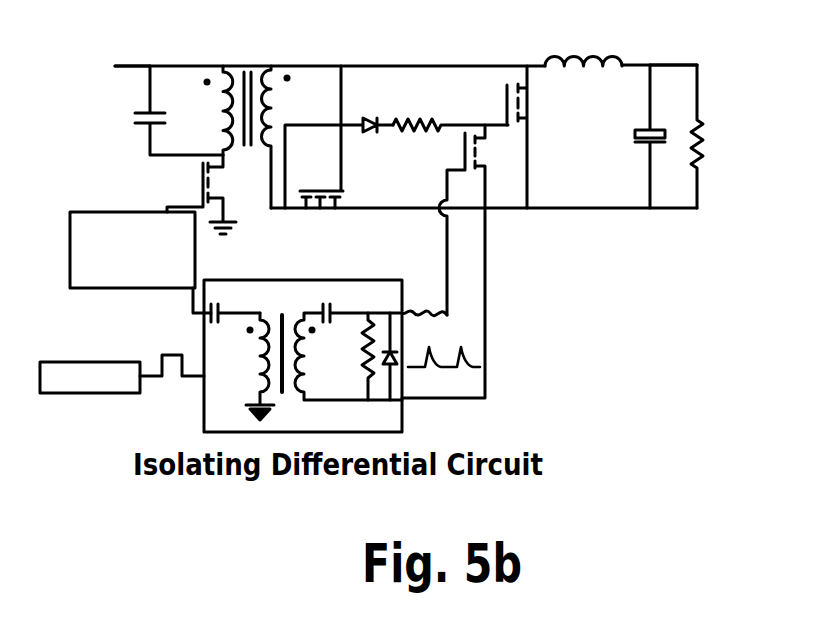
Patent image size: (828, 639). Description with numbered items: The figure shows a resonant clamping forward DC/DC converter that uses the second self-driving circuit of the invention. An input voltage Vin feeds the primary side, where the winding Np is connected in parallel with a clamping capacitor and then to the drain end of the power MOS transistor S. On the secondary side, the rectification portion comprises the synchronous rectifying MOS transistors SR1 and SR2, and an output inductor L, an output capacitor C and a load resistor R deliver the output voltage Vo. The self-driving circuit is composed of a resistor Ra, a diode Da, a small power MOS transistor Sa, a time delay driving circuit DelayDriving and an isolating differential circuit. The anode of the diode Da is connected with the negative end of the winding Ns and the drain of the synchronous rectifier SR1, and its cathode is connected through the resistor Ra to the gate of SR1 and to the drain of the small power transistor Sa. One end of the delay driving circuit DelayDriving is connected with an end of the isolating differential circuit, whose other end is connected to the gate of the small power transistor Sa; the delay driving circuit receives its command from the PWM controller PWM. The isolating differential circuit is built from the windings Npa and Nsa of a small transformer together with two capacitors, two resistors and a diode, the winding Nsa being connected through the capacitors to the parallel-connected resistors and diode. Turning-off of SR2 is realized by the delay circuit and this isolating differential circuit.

The input voltage Vin is at (122, 39).
The winding Np is at (202, 110).
The winding Ns is at (289, 137).
The power MOS transistor S is at (209, 194).
The synchronous rectifying MOS transistor SR1 is at (320, 157).
The synchronous rectifying MOS transistor SR2 is at (553, 137).
The diode Da is at (367, 107).
The resistor Ra is at (450, 107).
The small power MOS transistor Sa is at (443, 261).
The output inductor L is at (583, 38).
The output voltage Vo is at (681, 44).
The output capacitor C is at (633, 136).
The load resistor R is at (710, 136).
The delay driving circuit DelayDriving is at (140, 262).
The PWM controller PWM is at (122, 374).
The winding Npa is at (240, 366).
The winding Nsa is at (348, 352).